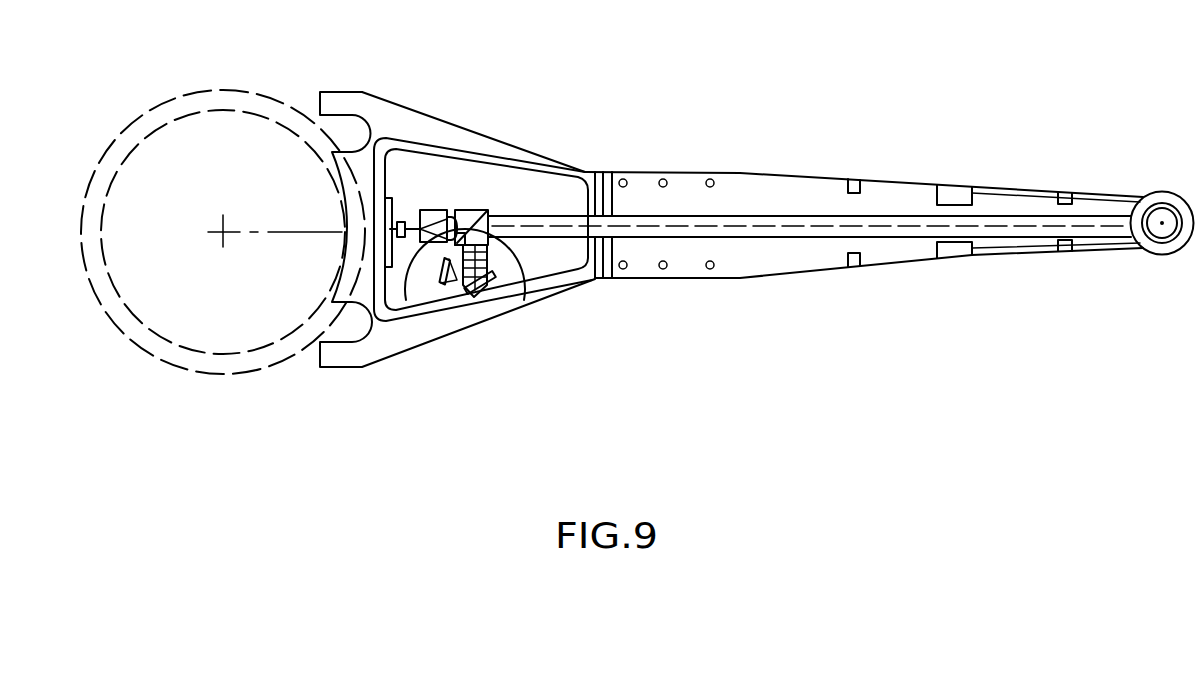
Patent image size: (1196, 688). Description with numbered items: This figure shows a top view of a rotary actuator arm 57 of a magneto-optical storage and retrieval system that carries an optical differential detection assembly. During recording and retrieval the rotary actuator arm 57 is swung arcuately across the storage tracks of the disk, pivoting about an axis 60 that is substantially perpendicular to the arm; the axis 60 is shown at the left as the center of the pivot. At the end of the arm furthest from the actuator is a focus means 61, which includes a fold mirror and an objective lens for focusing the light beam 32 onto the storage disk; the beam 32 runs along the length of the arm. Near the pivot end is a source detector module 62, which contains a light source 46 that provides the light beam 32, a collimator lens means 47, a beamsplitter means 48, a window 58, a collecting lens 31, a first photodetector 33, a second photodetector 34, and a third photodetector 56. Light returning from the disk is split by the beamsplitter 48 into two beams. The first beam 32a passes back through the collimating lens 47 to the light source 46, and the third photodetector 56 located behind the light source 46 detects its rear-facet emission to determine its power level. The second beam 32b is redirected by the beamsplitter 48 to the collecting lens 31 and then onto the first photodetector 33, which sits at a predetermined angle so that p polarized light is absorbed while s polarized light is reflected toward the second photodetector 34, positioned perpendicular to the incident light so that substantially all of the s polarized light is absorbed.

The collecting lens 31 is at (408, 296).
The light beam 32 is at (793, 215).
The first beam 32a is at (455, 210).
The second beam 32b is at (525, 277).
The first photodetector 33 is at (487, 285).
The second photodetector 34 is at (443, 283).
The light source 46 is at (406, 214).
The collimator lens means 47 is at (450, 212).
The beamsplitter means 48 is at (485, 209).
The third photodetector 56 is at (393, 208).
The rotary actuator arm 57 is at (733, 278).
The window 58 is at (586, 180).
The axis 60 is at (223, 233).
The focus means 61 is at (1160, 192).
The source detector module 62 is at (560, 257).